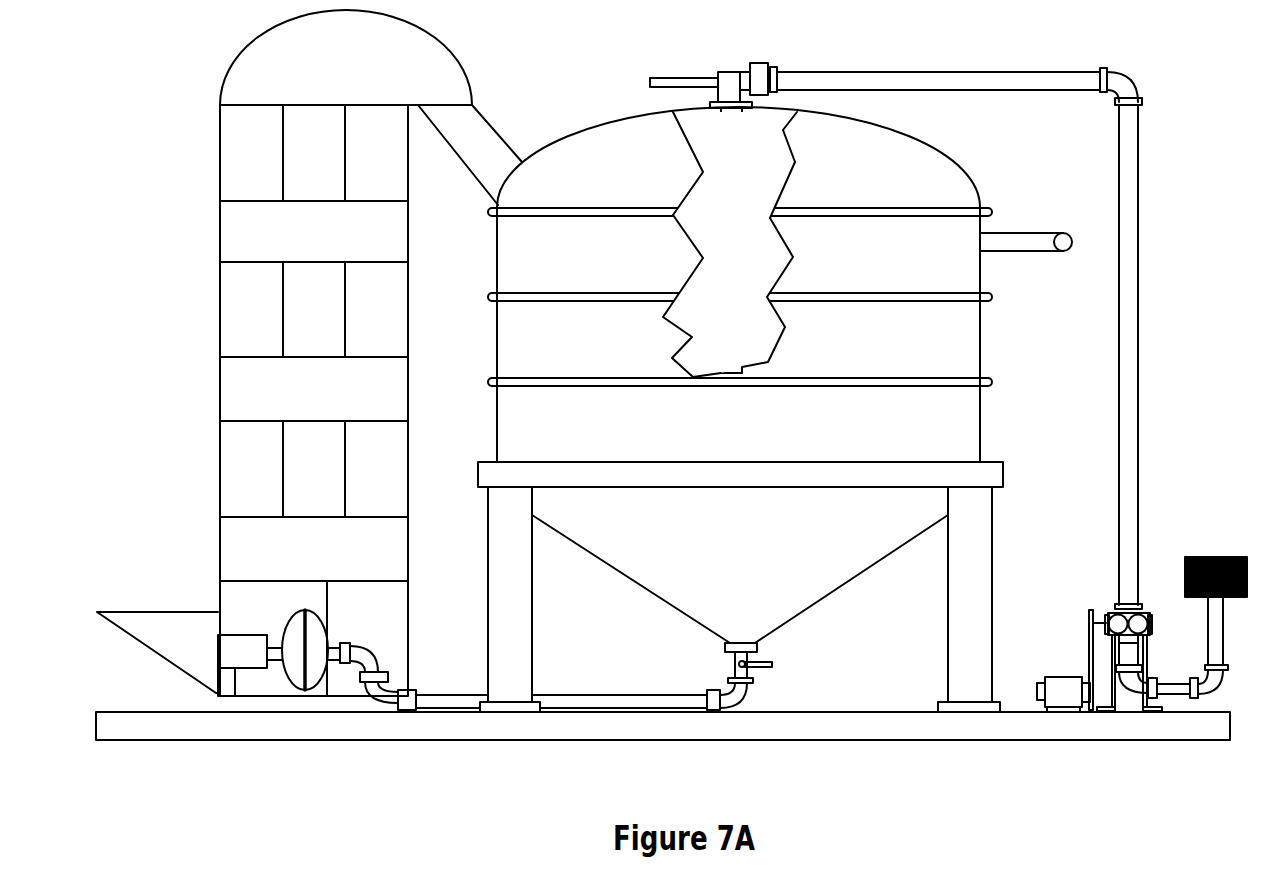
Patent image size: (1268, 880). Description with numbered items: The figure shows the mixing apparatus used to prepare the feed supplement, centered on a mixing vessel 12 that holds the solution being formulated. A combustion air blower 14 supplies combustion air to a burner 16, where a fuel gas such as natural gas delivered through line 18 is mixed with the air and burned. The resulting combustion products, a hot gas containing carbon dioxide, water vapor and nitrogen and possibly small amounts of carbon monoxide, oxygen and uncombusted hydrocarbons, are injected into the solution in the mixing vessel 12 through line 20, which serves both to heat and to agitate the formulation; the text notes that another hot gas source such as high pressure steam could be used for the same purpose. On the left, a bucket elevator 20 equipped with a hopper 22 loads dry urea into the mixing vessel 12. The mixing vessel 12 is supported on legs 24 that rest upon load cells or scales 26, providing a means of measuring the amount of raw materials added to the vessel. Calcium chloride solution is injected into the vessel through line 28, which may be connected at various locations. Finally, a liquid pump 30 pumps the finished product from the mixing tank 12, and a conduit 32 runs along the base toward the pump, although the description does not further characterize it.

The mixing vessel 12 is at (752, 430).
The combustion air blower 14 is at (1177, 518).
The burner 16 is at (763, 63).
The line 18 is at (687, 75).
The line 20 is at (218, 230).
The hopper 22 is at (190, 607).
The legs 24 is at (532, 573).
The load cells or scales 26 is at (510, 712).
The line 28 is at (1015, 232).
The liquid pump 30 is at (285, 680).
The conduit 32 is at (585, 700).